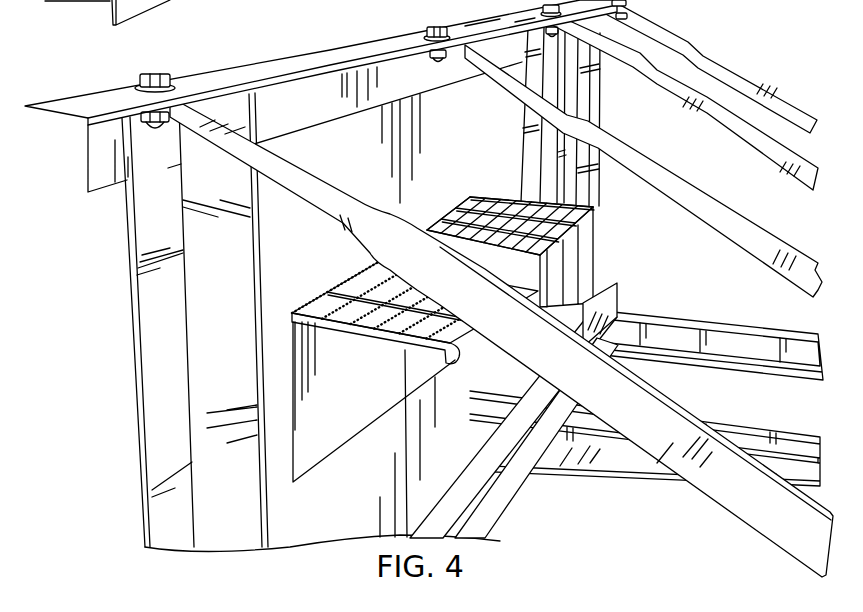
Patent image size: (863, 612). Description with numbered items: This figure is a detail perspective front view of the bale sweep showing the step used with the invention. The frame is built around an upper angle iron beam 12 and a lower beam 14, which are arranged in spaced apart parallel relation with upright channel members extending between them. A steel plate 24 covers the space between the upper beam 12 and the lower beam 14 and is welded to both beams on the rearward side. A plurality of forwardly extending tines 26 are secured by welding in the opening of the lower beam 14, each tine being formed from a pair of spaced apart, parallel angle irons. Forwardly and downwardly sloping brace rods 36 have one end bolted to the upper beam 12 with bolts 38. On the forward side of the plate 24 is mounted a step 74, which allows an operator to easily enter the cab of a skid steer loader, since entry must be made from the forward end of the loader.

The upper angle iron beam 12 is at (368, 50).
The lower beam 14 is at (494, 530).
The steel plate 24 is at (333, 150).
The tines 26 is at (768, 378).
The brace rod 36 is at (736, 70).
The bolts 38 is at (153, 131).
The step 74 is at (595, 215).